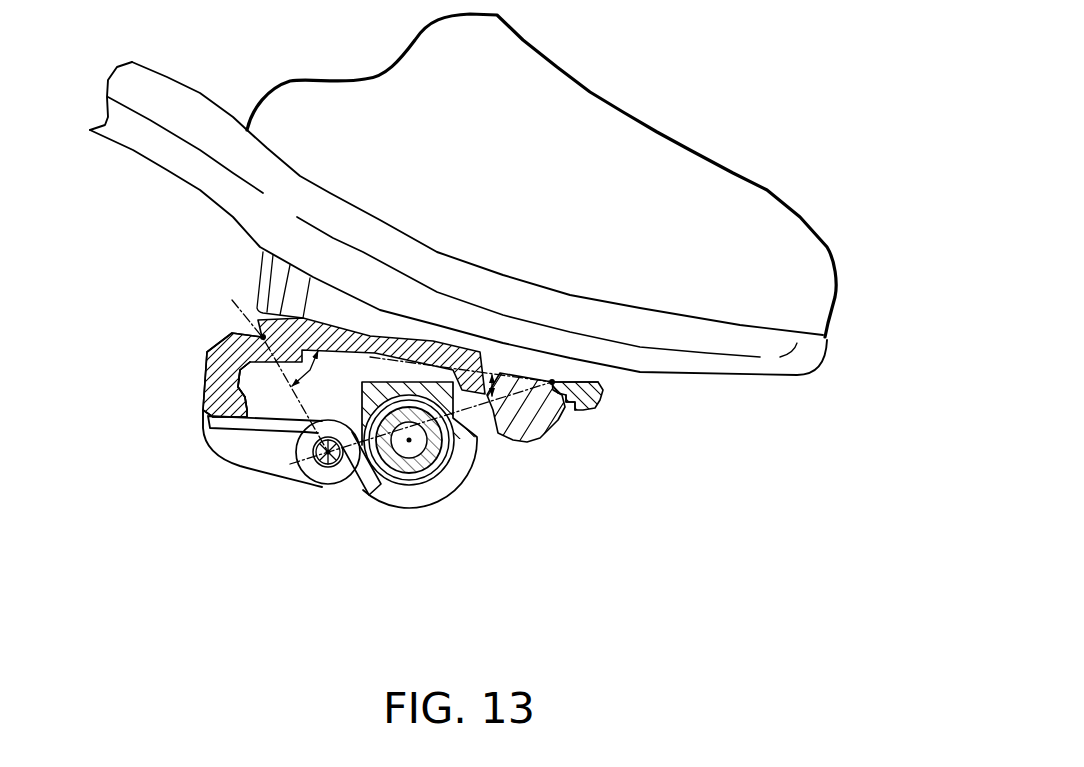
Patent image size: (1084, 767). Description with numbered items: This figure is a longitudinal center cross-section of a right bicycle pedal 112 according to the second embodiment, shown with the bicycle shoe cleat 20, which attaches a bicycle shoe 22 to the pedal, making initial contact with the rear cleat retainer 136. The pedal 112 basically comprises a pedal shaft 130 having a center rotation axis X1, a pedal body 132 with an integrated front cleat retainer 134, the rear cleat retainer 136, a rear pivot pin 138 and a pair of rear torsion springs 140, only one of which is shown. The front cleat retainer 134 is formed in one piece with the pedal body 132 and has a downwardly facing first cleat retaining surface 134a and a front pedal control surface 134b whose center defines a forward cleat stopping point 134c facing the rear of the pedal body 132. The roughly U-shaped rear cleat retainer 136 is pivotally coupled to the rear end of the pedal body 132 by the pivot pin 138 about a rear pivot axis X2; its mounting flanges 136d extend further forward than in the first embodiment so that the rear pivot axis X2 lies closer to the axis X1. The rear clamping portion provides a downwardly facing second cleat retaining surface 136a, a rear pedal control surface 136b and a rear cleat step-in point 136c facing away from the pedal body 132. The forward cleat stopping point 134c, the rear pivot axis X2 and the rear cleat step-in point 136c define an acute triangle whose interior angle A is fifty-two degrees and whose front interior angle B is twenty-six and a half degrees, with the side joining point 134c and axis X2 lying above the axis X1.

The bicycle shoe 22 is at (666, 132).
The bicycle shoe cleat 20 is at (487, 339).
The bicycle pedal 112 is at (378, 523).
The pedal shaft 130 is at (407, 480).
The pedal body 132 is at (478, 482).
The front cleat retainer 134 is at (600, 393).
The first cleat retaining surface 134a is at (577, 413).
The front pedal control surface 134b is at (555, 442).
The forward cleat stopping point 134c is at (553, 381).
The rear cleat retainer 136 is at (199, 367).
The second cleat retaining surface 136a is at (238, 367).
The rear pedal control surface 136b is at (330, 312).
The rear cleat step-in point 136c is at (263, 337).
The mounting flanges 136d is at (255, 468).
The rear pivot pin 138 is at (327, 458).
The rear torsion springs 140 is at (232, 442).
The interior angle A is at (310, 370).
The front interior angle B is at (493, 397).
The center rotation axis X1 is at (413, 453).
The rear pivot axis X2 is at (328, 457).